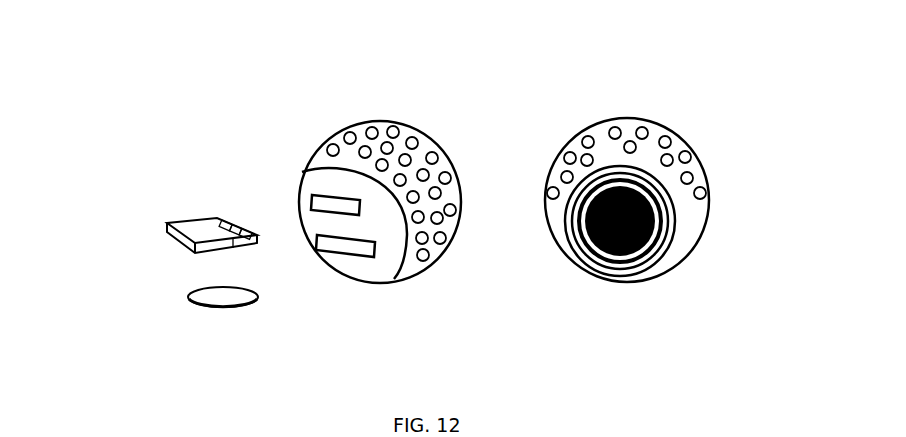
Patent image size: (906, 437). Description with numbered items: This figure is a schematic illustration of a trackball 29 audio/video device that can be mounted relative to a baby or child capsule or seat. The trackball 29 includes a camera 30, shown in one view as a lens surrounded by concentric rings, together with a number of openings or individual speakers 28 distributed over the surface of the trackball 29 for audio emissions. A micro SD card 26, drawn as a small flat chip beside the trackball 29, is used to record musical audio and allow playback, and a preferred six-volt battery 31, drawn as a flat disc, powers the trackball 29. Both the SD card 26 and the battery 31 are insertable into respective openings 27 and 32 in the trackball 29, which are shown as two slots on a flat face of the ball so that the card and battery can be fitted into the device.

The micro SD card 26 is at (173, 199).
The opening 27 is at (325, 178).
The openings or individual speakers 28 is at (566, 131).
The trackball 29 is at (688, 119).
The camera 30 is at (657, 230).
The 6V battery 31 is at (176, 320).
The opening 32 is at (339, 265).